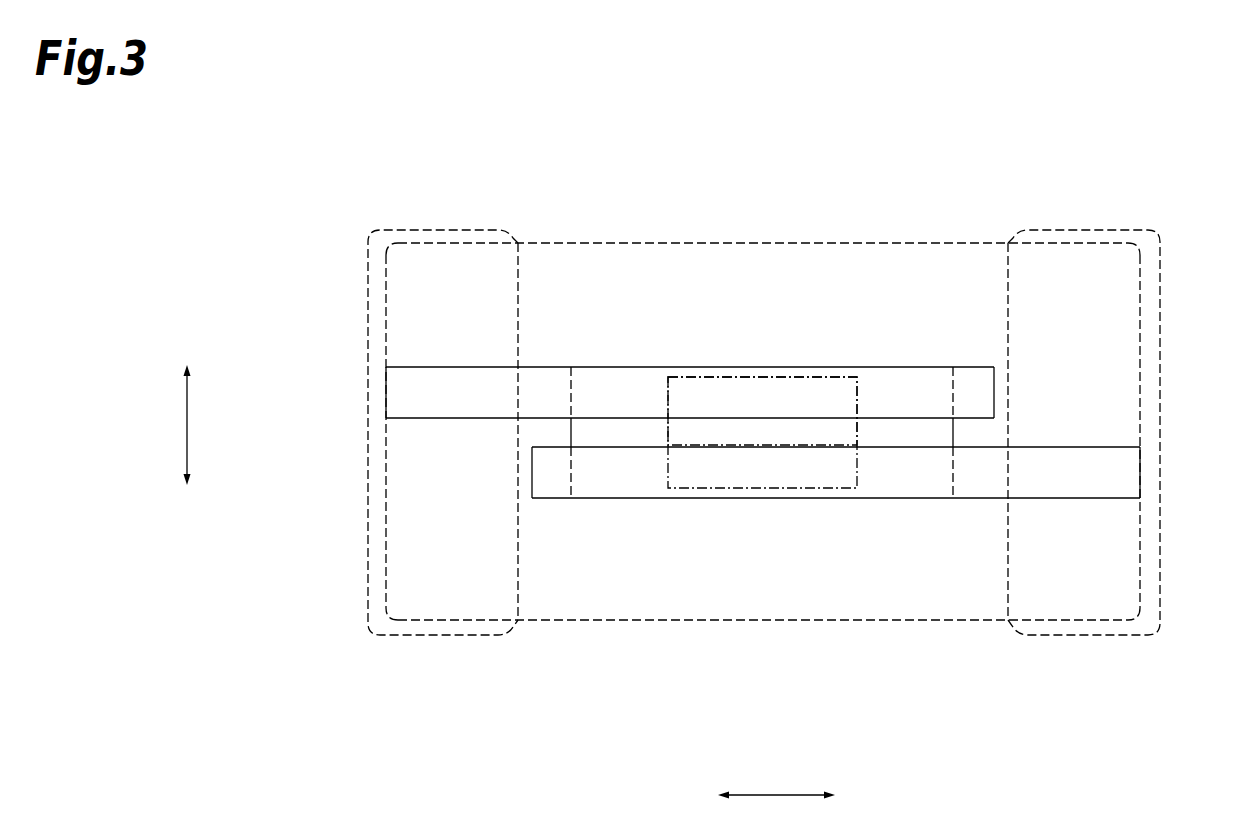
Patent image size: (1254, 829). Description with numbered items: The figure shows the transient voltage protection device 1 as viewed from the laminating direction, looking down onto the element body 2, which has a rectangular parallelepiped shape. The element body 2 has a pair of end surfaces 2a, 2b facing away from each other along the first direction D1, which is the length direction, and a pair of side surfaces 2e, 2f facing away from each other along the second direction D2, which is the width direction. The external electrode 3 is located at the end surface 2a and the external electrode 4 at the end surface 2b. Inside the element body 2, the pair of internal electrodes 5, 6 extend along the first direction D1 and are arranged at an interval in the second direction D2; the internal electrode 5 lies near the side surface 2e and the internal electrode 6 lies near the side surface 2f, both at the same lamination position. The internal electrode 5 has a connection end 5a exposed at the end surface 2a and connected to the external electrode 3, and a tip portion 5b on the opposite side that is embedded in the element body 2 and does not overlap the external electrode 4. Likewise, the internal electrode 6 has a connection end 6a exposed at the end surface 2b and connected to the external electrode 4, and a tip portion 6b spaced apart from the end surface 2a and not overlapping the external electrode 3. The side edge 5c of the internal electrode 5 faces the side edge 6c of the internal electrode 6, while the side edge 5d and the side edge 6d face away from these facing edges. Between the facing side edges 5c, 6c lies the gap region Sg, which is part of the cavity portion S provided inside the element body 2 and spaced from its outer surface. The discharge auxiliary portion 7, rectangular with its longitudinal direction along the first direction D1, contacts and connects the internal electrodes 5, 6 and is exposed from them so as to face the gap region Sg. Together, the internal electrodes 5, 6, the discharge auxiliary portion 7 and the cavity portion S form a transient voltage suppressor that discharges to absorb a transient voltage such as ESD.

The transient voltage protection device 1 is at (1115, 180).
The element body 2 is at (690, 238).
The end surface 2a is at (1142, 312).
The end surface 2b is at (390, 525).
The side surface 2e is at (820, 622).
The side surface 2f is at (790, 236).
The external electrode 3 is at (1083, 637).
The external electrode 4 is at (438, 637).
The internal electrode 5 is at (935, 487).
The connection end 5a is at (1140, 470).
The tip portion 5b is at (556, 481).
The side edge 5c is at (1110, 447).
The side edge 5d is at (1110, 498).
The internal electrode 6 is at (618, 385).
The connection end 6a is at (386, 397).
The tip portion 6b is at (975, 382).
The side edge 6c is at (417, 420).
The side edge 6d is at (418, 367).
The discharge auxiliary portion 7 is at (925, 430).
The cavity portion S is at (760, 478).
The gap region Sg is at (697, 432).
The first direction D1 is at (776, 811).
The second direction D2 is at (166, 425).